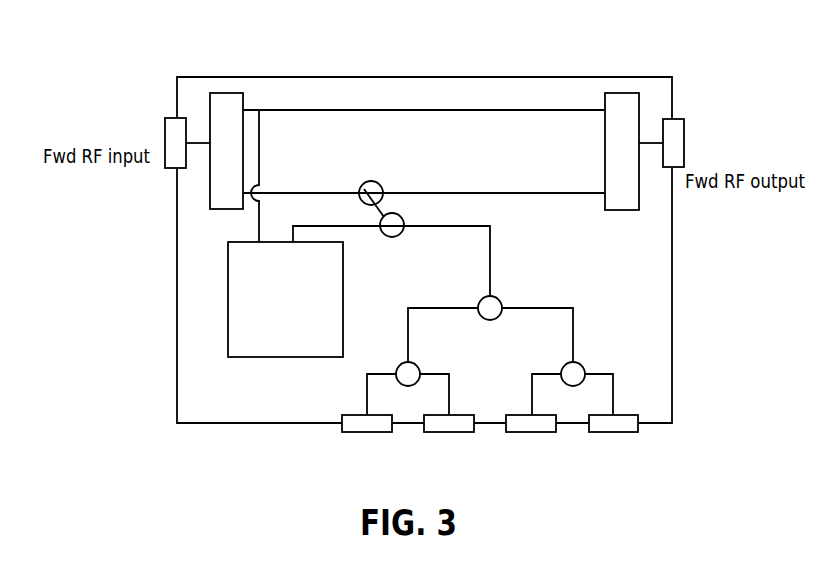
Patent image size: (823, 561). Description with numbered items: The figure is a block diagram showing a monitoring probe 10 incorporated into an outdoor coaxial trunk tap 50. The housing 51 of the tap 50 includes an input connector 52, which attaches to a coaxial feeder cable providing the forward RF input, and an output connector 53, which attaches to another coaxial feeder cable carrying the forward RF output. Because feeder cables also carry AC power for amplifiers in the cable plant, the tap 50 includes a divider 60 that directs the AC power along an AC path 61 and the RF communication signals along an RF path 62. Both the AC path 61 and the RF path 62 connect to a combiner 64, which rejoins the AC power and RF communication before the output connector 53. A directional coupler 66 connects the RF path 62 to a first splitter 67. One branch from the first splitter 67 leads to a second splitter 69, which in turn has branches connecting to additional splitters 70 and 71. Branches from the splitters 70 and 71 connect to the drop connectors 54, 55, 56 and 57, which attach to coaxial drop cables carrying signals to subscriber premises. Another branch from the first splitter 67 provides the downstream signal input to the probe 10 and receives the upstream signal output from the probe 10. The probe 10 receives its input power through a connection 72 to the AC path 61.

The probe 10 is at (238, 357).
The outdoor coaxial trunk tap 50 is at (178, 40).
The housing 51 is at (368, 77).
The input connector 52 is at (163, 121).
The output connector 53 is at (685, 130).
The connector 54 is at (348, 413).
The connector 55 is at (440, 414).
The connector 56 is at (517, 414).
The connector 57 is at (630, 416).
The divider 60 is at (212, 209).
The AC path 61 is at (474, 112).
The RF path 62 is at (565, 196).
The combiner 64 is at (632, 210).
The directional coupler 66 is at (371, 181).
The first splitter 67 is at (402, 234).
The second splitter 69 is at (500, 298).
The splitter 70 is at (416, 365).
The splitter 71 is at (581, 365).
The connection 72 is at (261, 118).